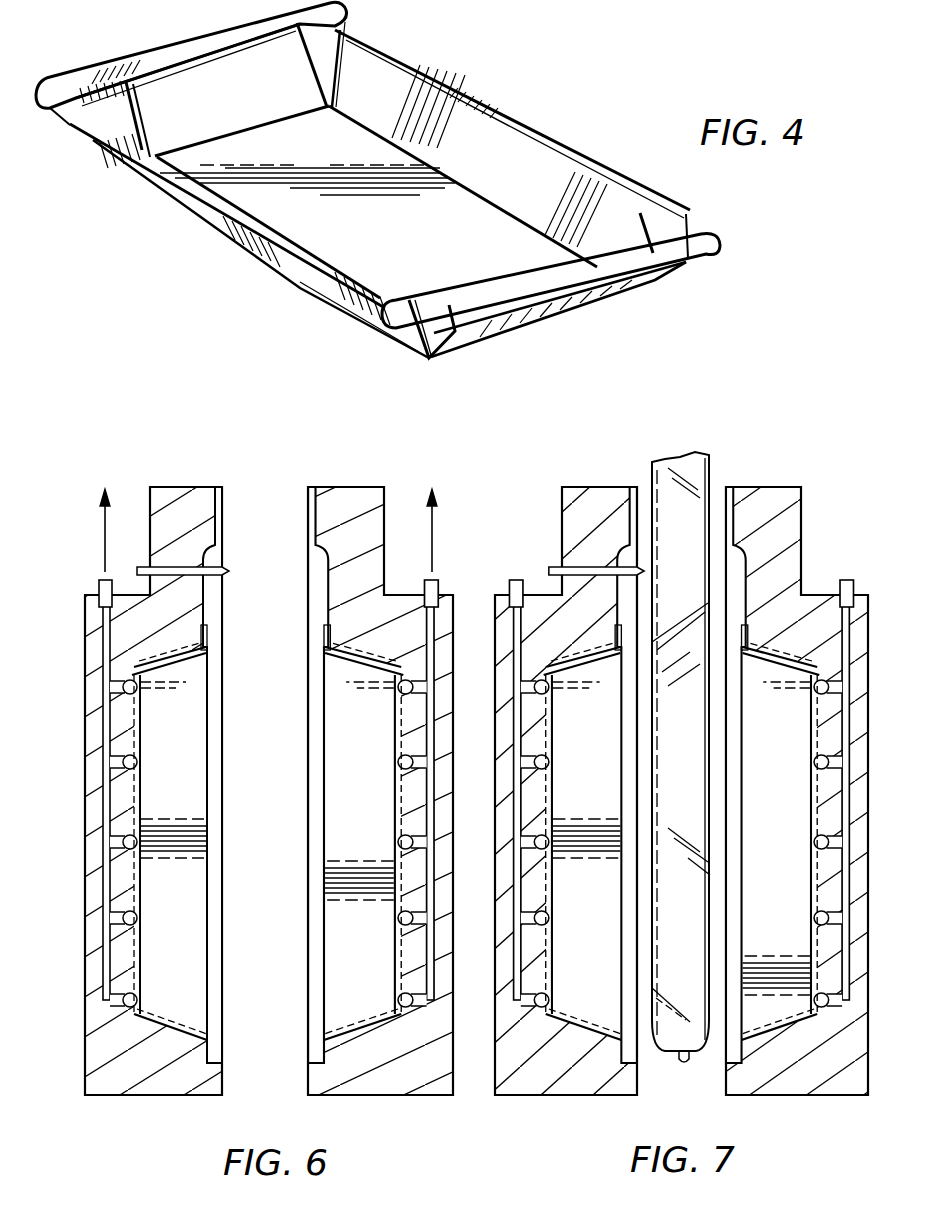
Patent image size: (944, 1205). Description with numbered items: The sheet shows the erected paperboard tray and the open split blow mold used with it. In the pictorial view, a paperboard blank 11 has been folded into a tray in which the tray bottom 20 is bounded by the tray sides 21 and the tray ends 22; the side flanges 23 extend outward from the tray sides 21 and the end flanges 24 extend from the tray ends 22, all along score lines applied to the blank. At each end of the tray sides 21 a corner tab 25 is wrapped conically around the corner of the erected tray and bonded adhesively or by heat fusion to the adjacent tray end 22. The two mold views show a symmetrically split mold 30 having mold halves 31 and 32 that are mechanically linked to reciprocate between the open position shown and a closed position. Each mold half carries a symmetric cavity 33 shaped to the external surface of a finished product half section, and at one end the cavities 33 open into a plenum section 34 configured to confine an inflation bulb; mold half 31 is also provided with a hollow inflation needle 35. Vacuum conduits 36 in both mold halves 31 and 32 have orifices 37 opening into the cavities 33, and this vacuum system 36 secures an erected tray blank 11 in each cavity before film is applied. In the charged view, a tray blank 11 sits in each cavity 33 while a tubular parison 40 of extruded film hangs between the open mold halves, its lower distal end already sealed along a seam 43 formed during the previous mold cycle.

In FIG. 6, the paperboard blank 11 is at (141, 797).
In FIG. 7, the paperboard blank 11 is at (552, 797).
In FIG. 4, the tray bottom 20 is at (395, 223).
In FIG. 4, the tray sides 21 is at (500, 163).
In FIG. 4, the tray ends 22 is at (228, 93).
In FIG. 4, the side flanges 23 is at (557, 128).
In FIG. 4, the end flanges 24 is at (140, 57).
In FIG. 4, the corner tab 25 is at (318, 62).
In FIG. 6, the split mold 30 is at (204, 1100).
In FIG. 7, the split mold 30 is at (620, 1114).
In FIG. 6, the mold half 31 is at (150, 1100).
In FIG. 7, the mold half 31 is at (562, 1097).
In FIG. 6, the mold half 32 is at (400, 1095).
In FIG. 7, the mold half 32 is at (798, 1093).
In FIG. 6, the cavities 33 is at (152, 1026).
In FIG. 7, the cavities 33 is at (681, 1024).
In FIG. 6, the plenum section 34 is at (310, 552).
In FIG. 7, the plenum section 34 is at (626, 558).
In FIG. 6, the hollow inflation needle 35 is at (137, 565).
In FIG. 7, the hollow inflation needle 35 is at (548, 565).
In FIG. 6, the vacuum conduits 36 is at (103, 830).
In FIG. 7, the vacuum conduits 36 is at (514, 872).
In FIG. 6, the orifices 37 is at (138, 918).
In FIG. 7, the orifices 37 is at (549, 918).
In FIG. 7, the parison 40 is at (697, 761).
In FIG. 7, the seam 43 is at (684, 1065).